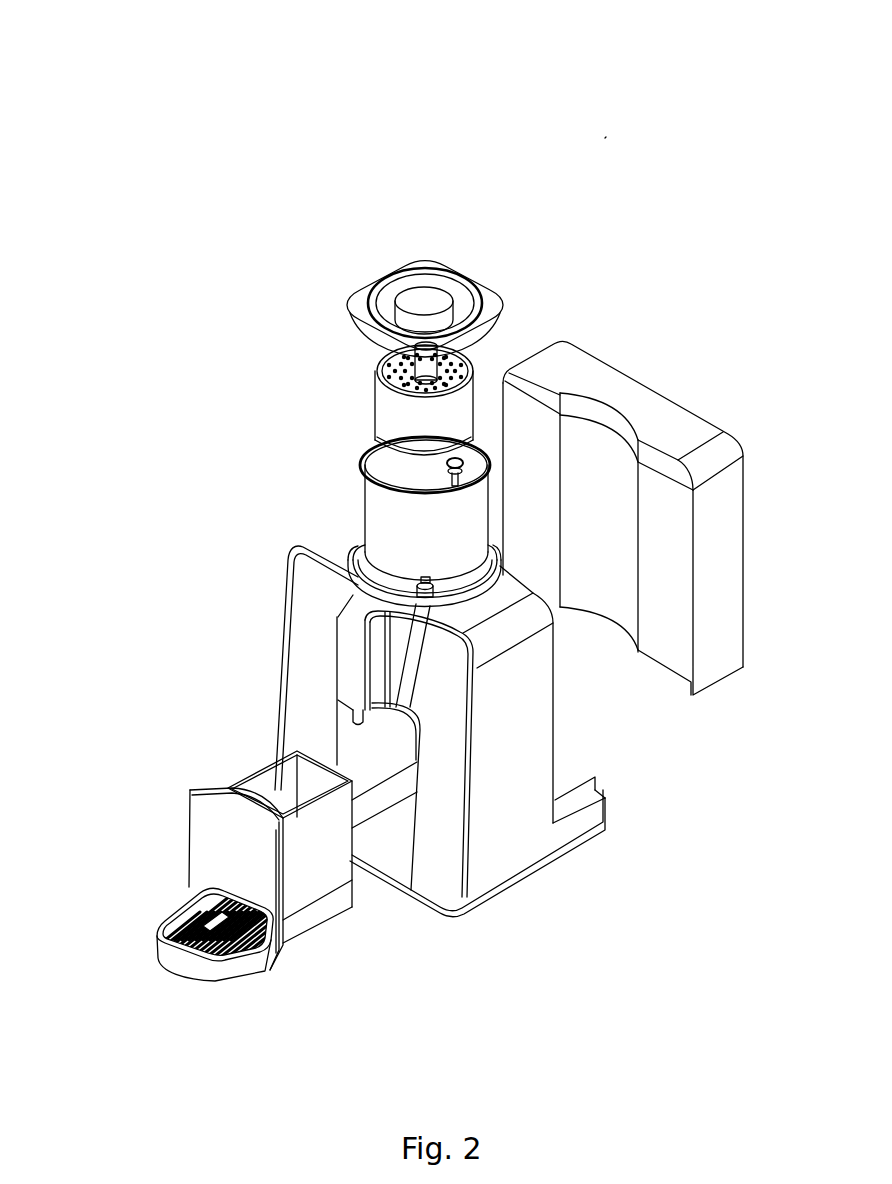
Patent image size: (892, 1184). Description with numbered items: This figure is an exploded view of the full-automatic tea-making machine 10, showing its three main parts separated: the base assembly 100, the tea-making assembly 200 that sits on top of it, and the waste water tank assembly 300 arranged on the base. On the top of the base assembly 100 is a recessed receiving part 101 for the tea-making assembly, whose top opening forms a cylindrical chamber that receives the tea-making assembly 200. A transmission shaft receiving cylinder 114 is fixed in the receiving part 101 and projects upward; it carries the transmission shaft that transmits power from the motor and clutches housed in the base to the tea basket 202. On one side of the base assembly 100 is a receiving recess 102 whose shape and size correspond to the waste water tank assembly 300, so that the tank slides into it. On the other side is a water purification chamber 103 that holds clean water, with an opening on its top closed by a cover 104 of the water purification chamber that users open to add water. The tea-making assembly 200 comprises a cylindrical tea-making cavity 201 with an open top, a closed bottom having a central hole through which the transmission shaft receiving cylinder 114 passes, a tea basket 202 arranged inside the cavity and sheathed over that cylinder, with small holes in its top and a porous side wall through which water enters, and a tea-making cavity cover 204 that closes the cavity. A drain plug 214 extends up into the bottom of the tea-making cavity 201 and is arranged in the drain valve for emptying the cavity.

The full-automatic tea-making machine 10 is at (606, 137).
The base assembly 100 is at (643, 832).
The receiving part for the tea-making assembly 101 is at (380, 572).
The receiving recess for the waste water tank assembly 102 is at (390, 852).
The water purification chamber 103 is at (730, 602).
The cover of the water purification chamber 104 is at (588, 372).
The transmission shaft receiving cylinder 114 is at (420, 598).
The tea-making assembly 200 is at (290, 409).
The tea-making cavity 201 is at (366, 509).
The tea basket 202 is at (396, 412).
The tea-making cavity cover 204 is at (420, 270).
The drain plug 214 is at (448, 466).
The waste water tank assembly 300 is at (165, 893).